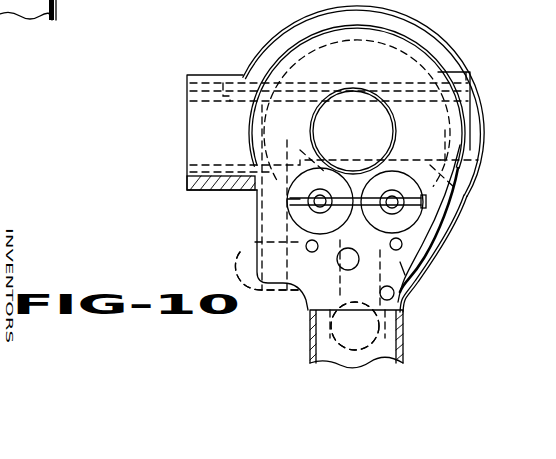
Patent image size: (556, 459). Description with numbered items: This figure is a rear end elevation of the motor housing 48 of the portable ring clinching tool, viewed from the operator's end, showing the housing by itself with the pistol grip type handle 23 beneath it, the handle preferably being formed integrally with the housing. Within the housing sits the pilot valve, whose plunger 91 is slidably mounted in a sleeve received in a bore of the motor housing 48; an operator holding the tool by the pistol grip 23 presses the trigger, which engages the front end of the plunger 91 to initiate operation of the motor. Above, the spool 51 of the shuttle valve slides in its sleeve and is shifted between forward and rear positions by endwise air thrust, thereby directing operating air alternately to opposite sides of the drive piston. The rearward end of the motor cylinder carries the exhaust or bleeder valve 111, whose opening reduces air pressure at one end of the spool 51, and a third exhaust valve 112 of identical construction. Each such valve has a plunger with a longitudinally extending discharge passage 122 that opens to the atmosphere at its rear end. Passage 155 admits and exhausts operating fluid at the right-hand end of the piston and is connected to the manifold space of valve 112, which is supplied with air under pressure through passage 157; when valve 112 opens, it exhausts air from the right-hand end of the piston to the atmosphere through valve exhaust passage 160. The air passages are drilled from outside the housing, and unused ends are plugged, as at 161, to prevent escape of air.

The pistol grip type handle 23 is at (405, 342).
The motor housing 48 is at (455, 48).
The spool 51 is at (398, 298).
The plunger 91 is at (340, 329).
The exhaust valve 111 is at (306, 212).
The third exhaust valve 112 is at (406, 212).
The discharge passage 122 is at (300, 199).
The passage 155 is at (476, 169).
The passage 157 is at (405, 271).
The valve exhaust passage 160 is at (427, 202).
The plug 161 is at (250, 244).